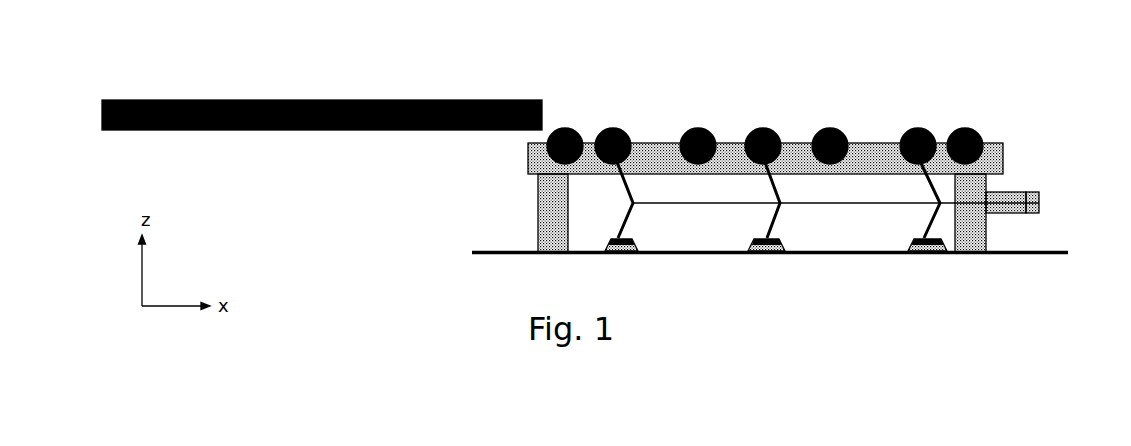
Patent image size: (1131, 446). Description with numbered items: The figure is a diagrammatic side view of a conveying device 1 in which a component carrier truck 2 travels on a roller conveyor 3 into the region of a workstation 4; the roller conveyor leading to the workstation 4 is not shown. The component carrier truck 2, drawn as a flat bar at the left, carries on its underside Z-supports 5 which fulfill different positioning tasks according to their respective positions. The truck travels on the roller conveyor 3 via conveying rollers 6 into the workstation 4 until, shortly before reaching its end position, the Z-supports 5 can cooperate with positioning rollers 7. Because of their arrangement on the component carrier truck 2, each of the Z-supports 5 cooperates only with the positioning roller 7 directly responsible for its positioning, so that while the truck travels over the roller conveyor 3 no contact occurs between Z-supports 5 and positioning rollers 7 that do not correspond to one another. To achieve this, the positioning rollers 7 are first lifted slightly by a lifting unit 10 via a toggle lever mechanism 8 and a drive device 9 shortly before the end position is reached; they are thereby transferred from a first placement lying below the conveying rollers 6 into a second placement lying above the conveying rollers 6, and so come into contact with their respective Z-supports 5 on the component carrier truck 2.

The conveying device 1 is at (524, 65).
The component carrier truck 2 is at (410, 100).
The roller conveyor 3 is at (653, 142).
The workstation 4 is at (1050, 100).
The Z-supports 5 is at (167, 130).
The conveying rollers 6 is at (567, 129).
The positioning rollers 7 is at (613, 129).
The toggle lever mechanism 8 is at (630, 215).
The drive device 9 is at (1018, 168).
The lifting unit 10 is at (846, 239).